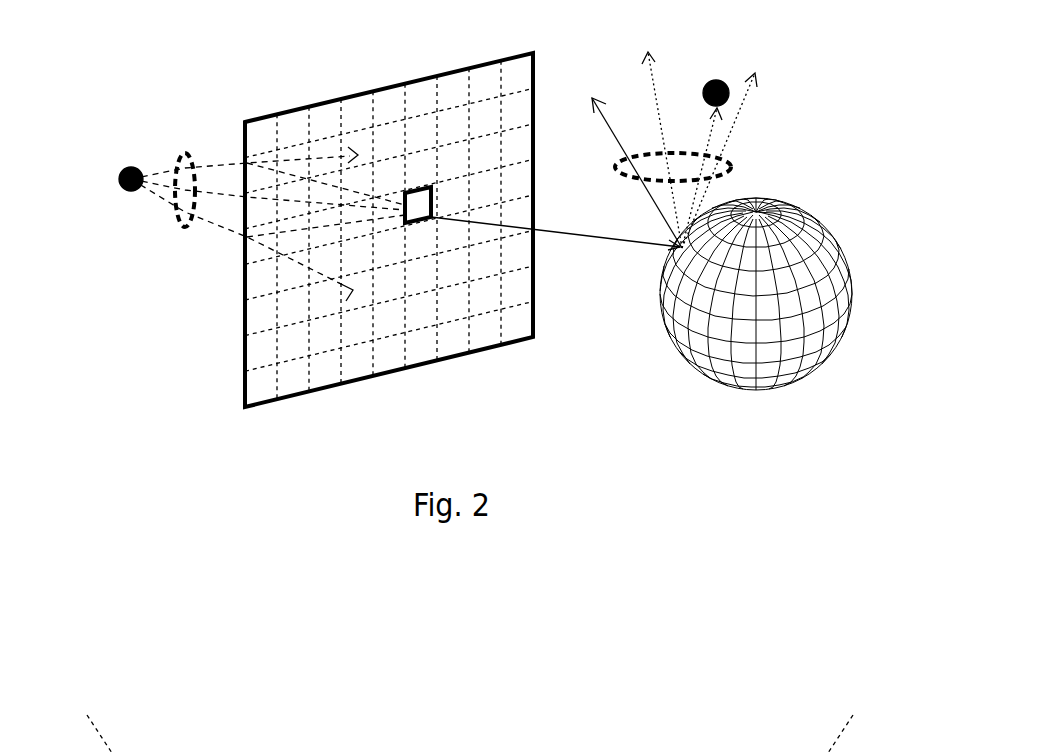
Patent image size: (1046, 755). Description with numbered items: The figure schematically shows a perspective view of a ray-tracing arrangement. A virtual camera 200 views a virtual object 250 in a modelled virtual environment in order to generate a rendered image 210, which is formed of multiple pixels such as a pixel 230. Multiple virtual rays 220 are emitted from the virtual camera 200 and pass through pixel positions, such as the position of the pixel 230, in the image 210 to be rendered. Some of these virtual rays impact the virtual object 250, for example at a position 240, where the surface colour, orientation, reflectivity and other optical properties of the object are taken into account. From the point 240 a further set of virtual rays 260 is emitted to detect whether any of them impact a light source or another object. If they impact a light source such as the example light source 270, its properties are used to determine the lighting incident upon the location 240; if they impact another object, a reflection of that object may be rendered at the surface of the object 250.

The virtual camera 200 is at (118, 185).
The rendered image 210 is at (245, 132).
The virtual rays 220 is at (180, 226).
The pixel 230 is at (427, 192).
The position 240 is at (677, 252).
The virtual object 250 is at (832, 246).
The further set of virtual rays 260 is at (735, 168).
The light source 270 is at (722, 80).